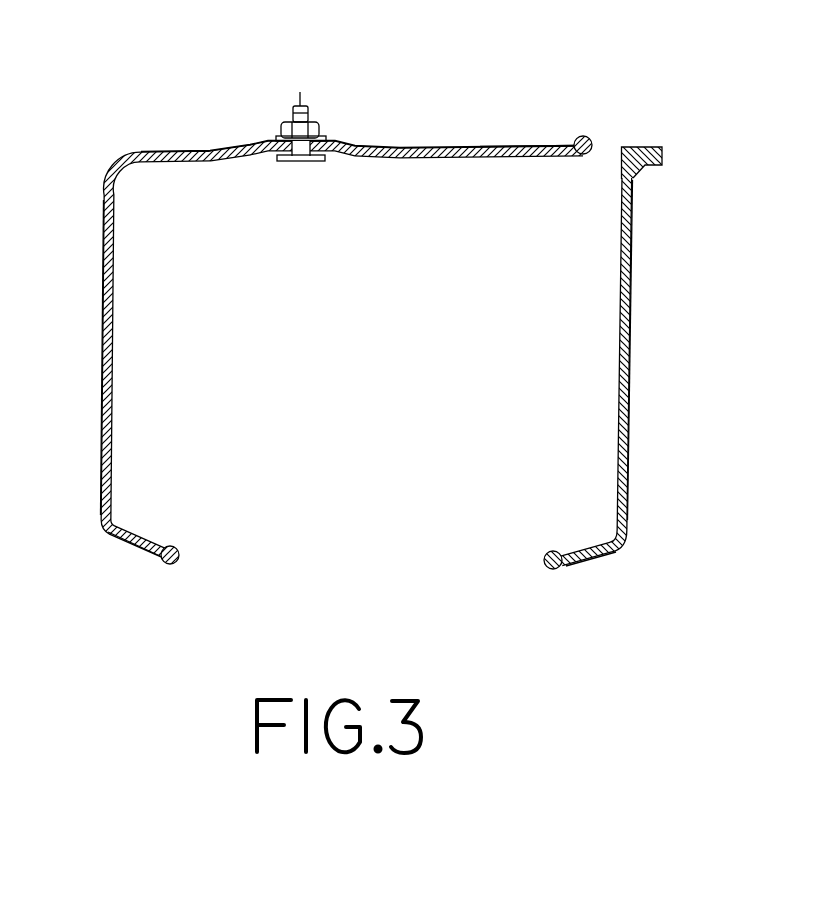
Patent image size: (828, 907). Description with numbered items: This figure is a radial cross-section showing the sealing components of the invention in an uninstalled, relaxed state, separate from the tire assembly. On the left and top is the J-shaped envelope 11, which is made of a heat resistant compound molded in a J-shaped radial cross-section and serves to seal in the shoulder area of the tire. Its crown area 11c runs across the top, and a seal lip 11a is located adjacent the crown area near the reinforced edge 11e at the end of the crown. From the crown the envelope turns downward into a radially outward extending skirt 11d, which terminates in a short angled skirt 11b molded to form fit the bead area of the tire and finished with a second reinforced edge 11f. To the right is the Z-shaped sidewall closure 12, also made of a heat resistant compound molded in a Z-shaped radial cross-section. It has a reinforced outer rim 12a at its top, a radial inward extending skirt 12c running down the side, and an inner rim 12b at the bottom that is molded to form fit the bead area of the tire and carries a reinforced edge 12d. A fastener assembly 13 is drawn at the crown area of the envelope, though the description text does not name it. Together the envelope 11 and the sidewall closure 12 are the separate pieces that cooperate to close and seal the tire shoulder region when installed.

The J-shaped envelope 11 is at (103, 210).
The seal lip 11a is at (554, 150).
The short angled skirt 11b is at (132, 544).
The crown area 11c is at (398, 147).
The radially outward extending skirt 11d is at (102, 318).
The reinforced edge 11e is at (590, 139).
The reinforced edge 11f is at (168, 546).
The Z-shaped sidewall closure 12 is at (631, 253).
The reinforced outer rim 12a is at (644, 167).
The inner rim 12b is at (597, 551).
The radial inward extending skirt 12c is at (631, 352).
The reinforced edge 12d is at (553, 550).
The bolt and nut fastener 13 is at (300, 92).